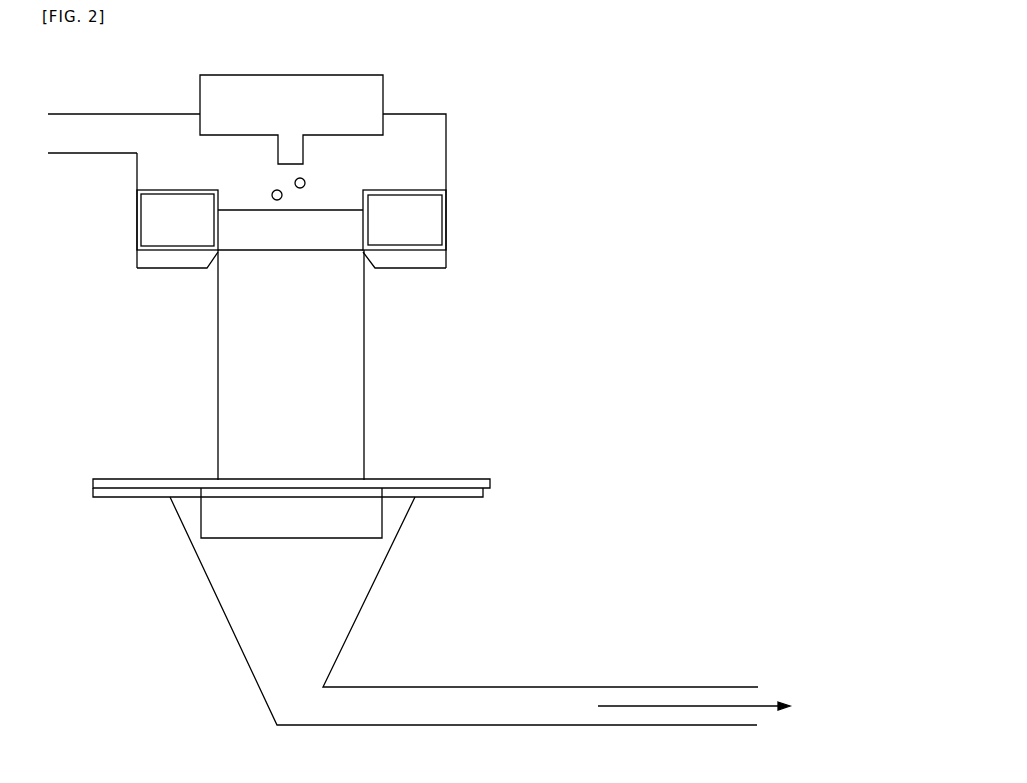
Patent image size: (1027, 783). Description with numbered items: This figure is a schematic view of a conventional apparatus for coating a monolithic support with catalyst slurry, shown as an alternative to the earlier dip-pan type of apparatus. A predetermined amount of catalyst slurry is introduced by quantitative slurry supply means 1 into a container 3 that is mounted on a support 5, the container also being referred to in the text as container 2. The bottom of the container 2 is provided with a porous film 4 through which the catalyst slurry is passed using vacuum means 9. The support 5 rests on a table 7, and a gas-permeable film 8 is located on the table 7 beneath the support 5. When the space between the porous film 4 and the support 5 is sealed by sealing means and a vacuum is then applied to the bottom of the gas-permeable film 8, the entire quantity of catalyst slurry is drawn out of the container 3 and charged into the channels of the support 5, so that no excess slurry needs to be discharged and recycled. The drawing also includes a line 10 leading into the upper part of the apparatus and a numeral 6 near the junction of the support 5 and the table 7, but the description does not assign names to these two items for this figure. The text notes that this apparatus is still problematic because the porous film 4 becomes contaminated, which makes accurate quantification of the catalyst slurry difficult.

The quantitative slurry supply means 1 is at (415, 88).
The container 2 is at (480, 191).
The container 3 is at (447, 236).
The porous film 4 is at (275, 250).
The support 5 is at (365, 356).
The seal 6 is at (365, 480).
The table 7 is at (448, 480).
The gas-permeable film 8 is at (255, 545).
The vacuum means 9 is at (358, 618).
The inlet line 10 is at (131, 114).